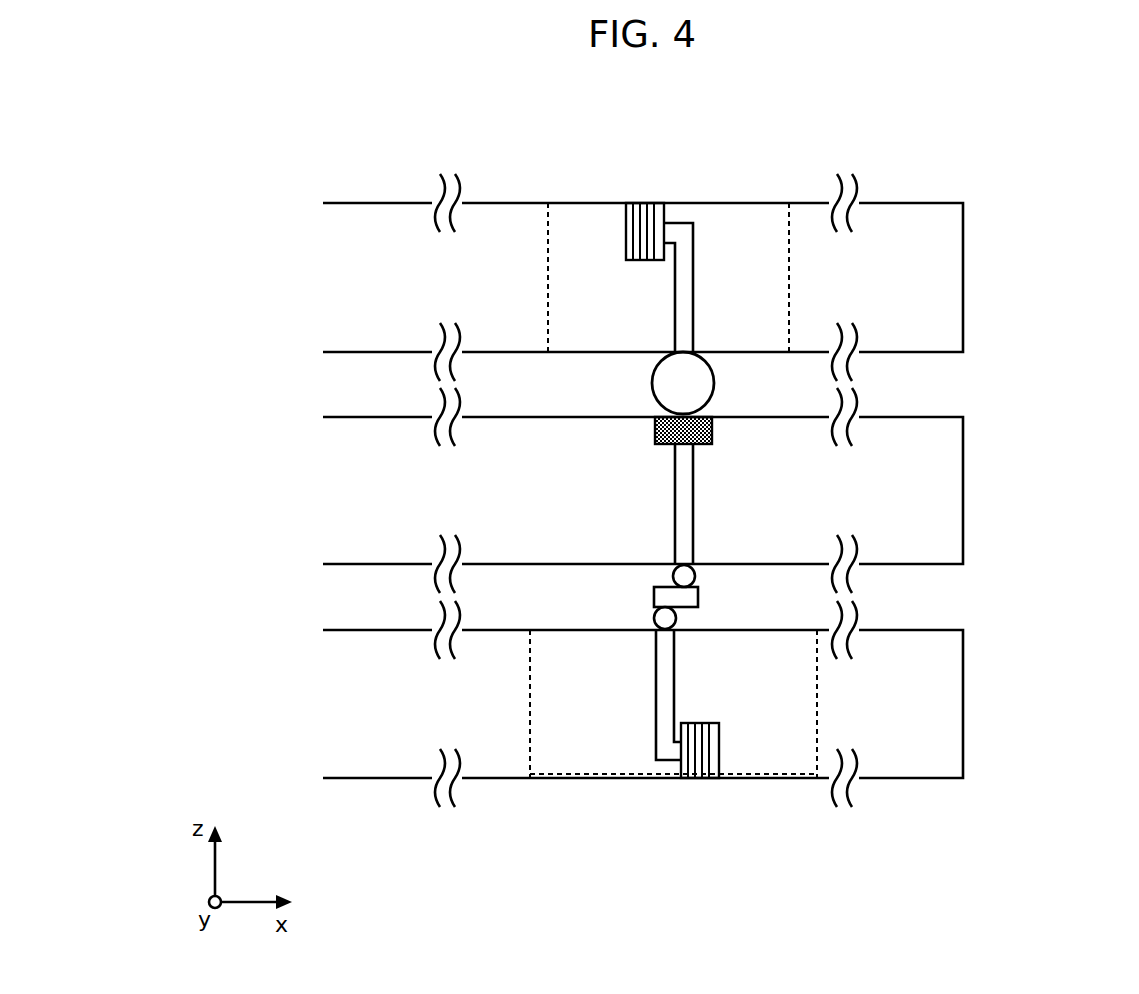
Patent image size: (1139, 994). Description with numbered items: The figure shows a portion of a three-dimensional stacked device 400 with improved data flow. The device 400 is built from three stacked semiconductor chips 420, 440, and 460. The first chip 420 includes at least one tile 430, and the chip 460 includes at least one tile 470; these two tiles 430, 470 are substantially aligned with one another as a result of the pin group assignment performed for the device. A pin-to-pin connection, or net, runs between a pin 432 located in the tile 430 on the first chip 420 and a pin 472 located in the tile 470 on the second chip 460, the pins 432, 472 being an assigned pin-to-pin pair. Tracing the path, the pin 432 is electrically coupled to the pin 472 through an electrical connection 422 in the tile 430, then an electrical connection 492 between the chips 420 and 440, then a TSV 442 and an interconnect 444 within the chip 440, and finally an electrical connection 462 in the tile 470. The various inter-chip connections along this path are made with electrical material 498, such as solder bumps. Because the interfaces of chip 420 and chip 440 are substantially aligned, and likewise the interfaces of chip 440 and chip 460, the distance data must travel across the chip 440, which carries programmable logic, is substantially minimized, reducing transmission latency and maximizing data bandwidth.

The 3D stacked device 400 is at (946, 149).
The semiconductor chip 460 is at (963, 274).
The tile 470 is at (789, 281).
The pin 472 is at (626, 232).
The electrical connection 462 is at (693, 287).
The electrical material 498 is at (714, 383).
The interconnect 444 is at (712, 430).
The semiconductor chip 440 is at (963, 486).
The TSV 442 is at (693, 497).
The electrical connection 492 is at (698, 595).
The semiconductor chip 420 is at (963, 698).
The tile 430 is at (817, 700).
The electrical connection 422 is at (656, 685).
The pin 432 is at (719, 748).